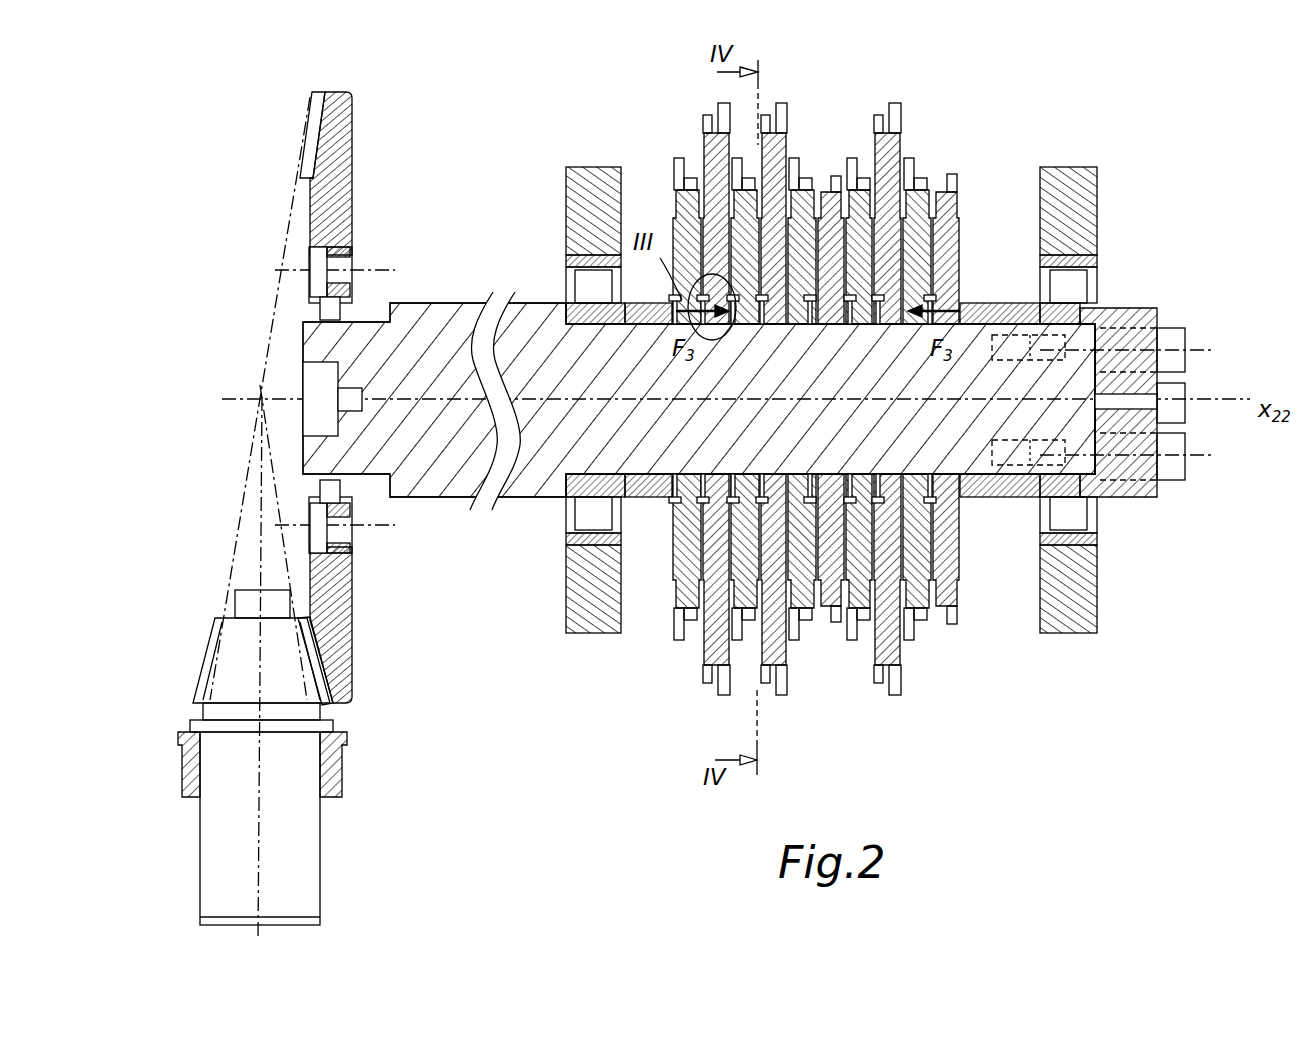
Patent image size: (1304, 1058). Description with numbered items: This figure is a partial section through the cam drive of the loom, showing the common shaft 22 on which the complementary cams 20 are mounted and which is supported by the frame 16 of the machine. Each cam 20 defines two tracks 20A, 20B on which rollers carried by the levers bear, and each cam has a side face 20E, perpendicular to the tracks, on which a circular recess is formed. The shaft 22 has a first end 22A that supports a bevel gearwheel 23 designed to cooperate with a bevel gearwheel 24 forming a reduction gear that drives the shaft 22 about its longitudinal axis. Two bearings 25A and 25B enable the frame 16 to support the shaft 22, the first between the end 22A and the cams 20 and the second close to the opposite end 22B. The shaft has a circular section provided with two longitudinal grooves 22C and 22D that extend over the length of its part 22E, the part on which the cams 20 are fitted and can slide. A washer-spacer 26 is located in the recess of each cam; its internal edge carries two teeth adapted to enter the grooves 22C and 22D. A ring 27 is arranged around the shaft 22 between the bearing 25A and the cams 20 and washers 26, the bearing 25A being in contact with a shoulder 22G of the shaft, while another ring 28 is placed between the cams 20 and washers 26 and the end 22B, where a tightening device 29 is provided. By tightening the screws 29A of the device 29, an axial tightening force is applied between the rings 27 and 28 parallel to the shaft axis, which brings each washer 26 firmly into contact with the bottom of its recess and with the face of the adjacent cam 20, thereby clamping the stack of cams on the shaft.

The frame 16 is at (605, 167).
The complementary cams 20 is at (795, 160).
The track 20A is at (766, 130).
The track 20B is at (786, 118).
The side face 20E is at (752, 135).
The common shaft 22 is at (424, 497).
The first end 22A is at (303, 447).
The end 22B is at (1110, 470).
The longitudinal groove 22C is at (958, 245).
The longitudinal groove 22D is at (858, 642).
The part 22E is at (856, 326).
The shoulder 22G is at (542, 303).
The bevel gearwheel 23 is at (353, 205).
The bevel gearwheel 24 is at (215, 662).
The bearing 25A is at (566, 268).
The bearing 25B is at (1098, 290).
The washer-spacer 26 is at (830, 325).
The ring 27 is at (645, 500).
The ring 28 is at (987, 500).
The tightening device 29 is at (1150, 310).
The screws 29A is at (1180, 455).